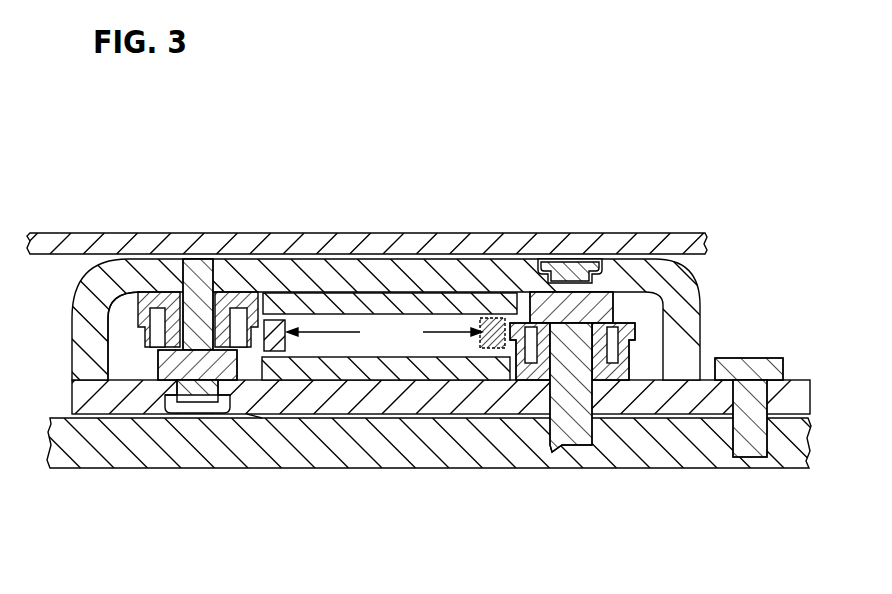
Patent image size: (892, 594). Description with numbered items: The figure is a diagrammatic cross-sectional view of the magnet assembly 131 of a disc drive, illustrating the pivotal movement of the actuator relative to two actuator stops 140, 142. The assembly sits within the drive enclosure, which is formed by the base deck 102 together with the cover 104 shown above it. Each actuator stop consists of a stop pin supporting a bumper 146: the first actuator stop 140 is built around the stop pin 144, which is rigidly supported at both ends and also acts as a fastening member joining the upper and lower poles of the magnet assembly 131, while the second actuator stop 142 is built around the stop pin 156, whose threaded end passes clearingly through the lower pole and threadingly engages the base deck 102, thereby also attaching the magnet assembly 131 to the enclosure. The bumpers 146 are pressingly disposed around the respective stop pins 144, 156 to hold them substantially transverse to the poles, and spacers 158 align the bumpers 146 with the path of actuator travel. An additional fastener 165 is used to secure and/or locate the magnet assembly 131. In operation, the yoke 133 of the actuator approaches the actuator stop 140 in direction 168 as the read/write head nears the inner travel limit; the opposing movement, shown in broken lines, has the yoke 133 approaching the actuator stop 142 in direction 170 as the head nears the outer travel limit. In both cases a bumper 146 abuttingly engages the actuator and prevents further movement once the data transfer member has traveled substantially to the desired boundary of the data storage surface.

The base deck 102 is at (197, 469).
The cover 104 is at (79, 231).
The magnet assembly 131 is at (418, 180).
The yoke 133 is at (276, 319).
The actuator stop 140 is at (127, 362).
The actuator stop 142 is at (625, 313).
The stop pin 144 is at (184, 259).
The bumper 146 is at (140, 317).
The stop pin 156 is at (597, 410).
The spacer 158 is at (520, 291).
The fastener 165 is at (768, 356).
The direction 168 is at (327, 339).
The direction 170 is at (447, 339).